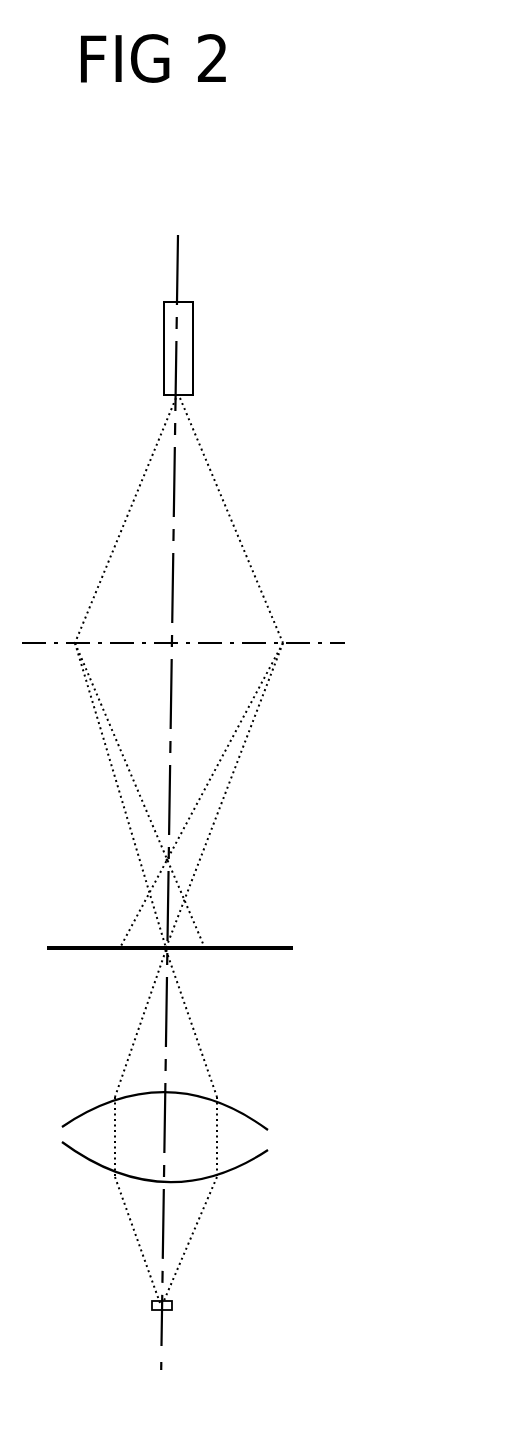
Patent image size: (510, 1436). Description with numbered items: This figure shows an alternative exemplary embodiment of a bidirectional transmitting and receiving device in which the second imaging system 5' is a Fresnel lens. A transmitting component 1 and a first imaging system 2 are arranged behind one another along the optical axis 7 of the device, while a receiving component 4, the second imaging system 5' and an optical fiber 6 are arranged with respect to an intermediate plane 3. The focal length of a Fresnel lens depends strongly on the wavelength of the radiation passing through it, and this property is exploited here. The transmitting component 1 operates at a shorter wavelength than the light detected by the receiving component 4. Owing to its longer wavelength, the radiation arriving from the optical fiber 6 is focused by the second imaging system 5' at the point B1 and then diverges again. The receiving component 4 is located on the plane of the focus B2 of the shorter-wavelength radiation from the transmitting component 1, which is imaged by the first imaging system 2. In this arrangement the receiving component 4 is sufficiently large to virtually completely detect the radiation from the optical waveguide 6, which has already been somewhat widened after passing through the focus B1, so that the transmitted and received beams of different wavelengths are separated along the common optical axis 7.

The transmitting component 1 is at (172, 1308).
The first imaging system 2 is at (233, 1137).
The intermediate plane 3 is at (270, 950).
The receiving component 4 is at (270, 950).
The second imaging system 5' is at (186, 683).
The optical fiber 6 is at (185, 365).
The optical axis 7 is at (178, 278).
The focus point of longer-wavelength radiation B1 is at (174, 858).
The focus of shorter-wavelength radiation B2 is at (180, 960).